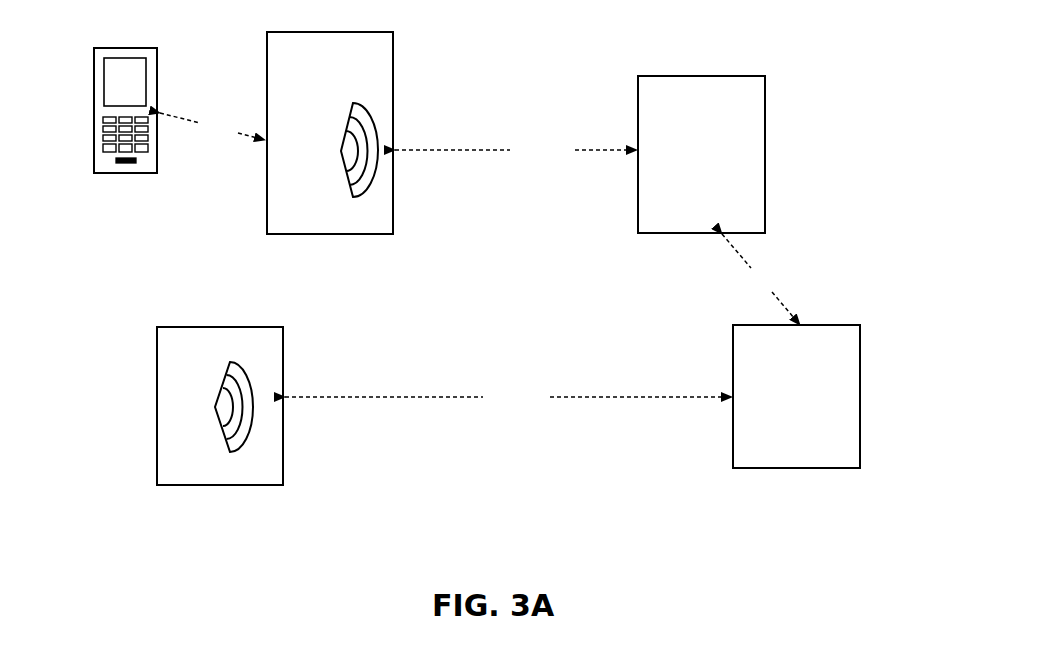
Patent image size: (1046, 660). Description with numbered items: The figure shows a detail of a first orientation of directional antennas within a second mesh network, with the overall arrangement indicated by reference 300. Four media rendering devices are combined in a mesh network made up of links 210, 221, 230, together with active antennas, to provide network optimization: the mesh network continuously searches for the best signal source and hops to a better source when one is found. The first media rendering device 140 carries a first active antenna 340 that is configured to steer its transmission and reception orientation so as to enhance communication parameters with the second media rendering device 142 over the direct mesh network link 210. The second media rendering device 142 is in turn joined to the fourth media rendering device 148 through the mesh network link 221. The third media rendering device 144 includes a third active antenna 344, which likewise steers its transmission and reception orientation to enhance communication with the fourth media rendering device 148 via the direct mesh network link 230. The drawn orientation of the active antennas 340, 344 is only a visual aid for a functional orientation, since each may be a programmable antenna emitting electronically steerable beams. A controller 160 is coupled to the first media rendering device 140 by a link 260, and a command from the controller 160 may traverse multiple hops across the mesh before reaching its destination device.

The controller 160 is at (93, 171).
The communication link 260 is at (212, 128).
The first media rendering device 140 is at (350, 63).
The first active antenna 340 is at (339, 161).
The direct mesh network link 210 is at (516, 151).
The second media rendering device 142 is at (720, 106).
The mesh network link 221 is at (761, 279).
The fourth media rendering device 148 is at (817, 355).
The direct mesh network link 230 is at (508, 398).
The third media rendering device 144 is at (241, 357).
The third active antenna 344 is at (214, 420).
The system 300 is at (883, 493).